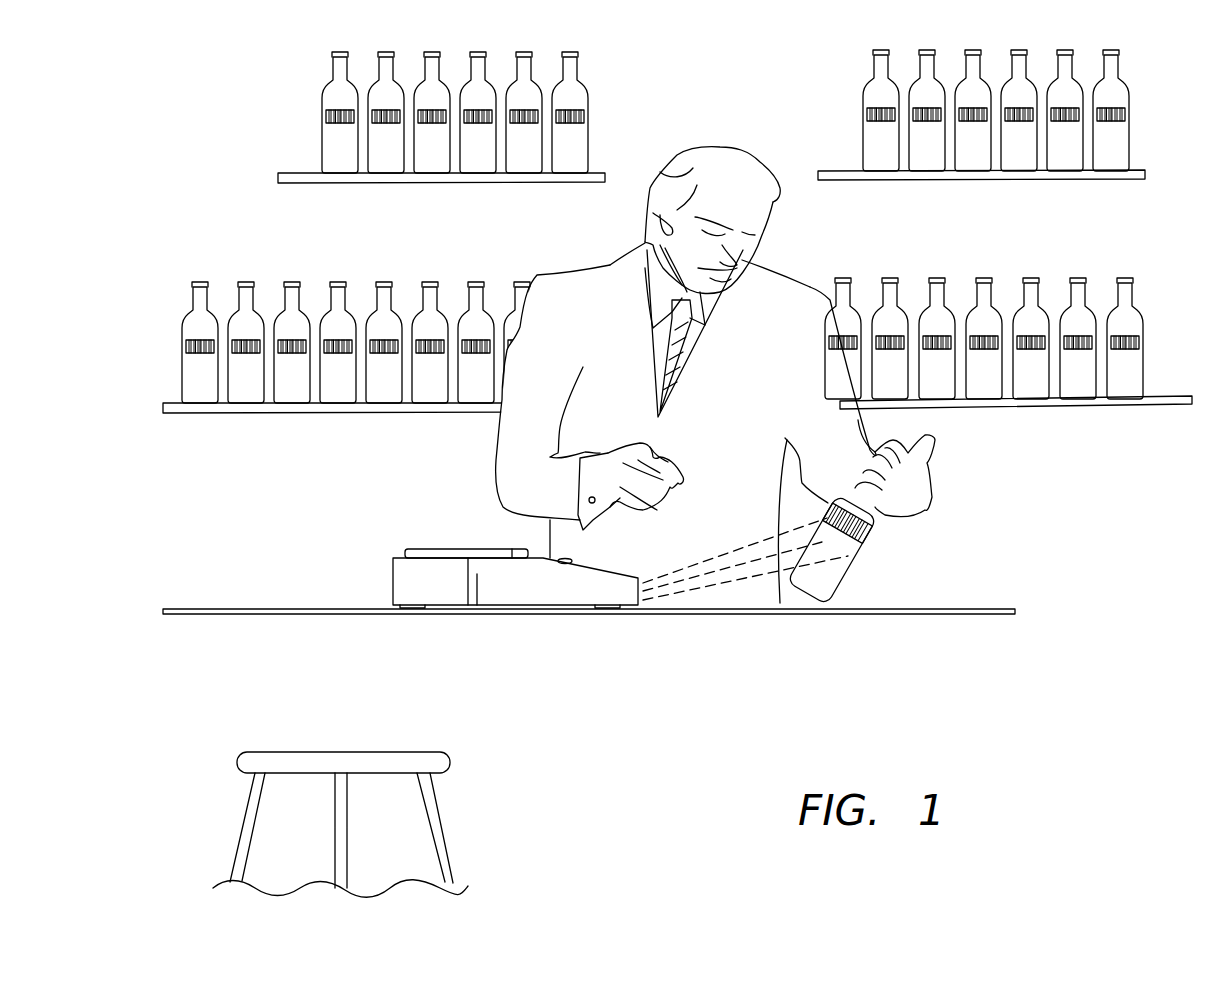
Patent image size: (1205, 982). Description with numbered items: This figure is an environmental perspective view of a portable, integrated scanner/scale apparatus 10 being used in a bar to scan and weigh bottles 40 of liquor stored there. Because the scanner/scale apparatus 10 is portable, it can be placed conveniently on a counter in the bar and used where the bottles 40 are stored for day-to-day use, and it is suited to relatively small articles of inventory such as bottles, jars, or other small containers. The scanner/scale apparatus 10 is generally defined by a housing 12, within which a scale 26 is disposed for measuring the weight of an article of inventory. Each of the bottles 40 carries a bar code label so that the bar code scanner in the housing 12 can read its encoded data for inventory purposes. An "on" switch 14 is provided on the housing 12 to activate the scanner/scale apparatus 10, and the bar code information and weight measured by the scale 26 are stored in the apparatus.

The scanner/scale apparatus 10 is at (446, 530).
The housing 12 is at (392, 590).
The "on" switch 14 is at (572, 559).
The scale 26 is at (483, 548).
The bottles 40 is at (878, 550).